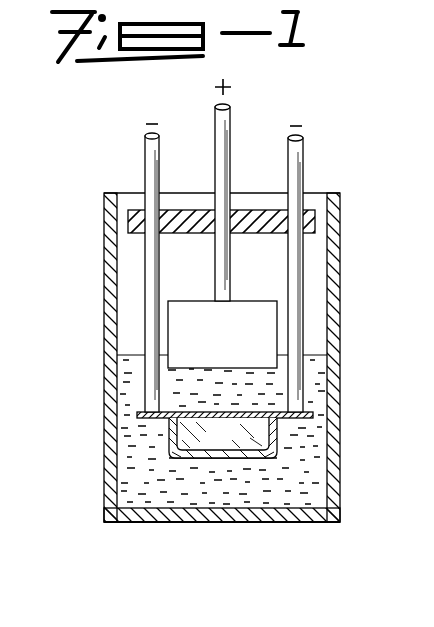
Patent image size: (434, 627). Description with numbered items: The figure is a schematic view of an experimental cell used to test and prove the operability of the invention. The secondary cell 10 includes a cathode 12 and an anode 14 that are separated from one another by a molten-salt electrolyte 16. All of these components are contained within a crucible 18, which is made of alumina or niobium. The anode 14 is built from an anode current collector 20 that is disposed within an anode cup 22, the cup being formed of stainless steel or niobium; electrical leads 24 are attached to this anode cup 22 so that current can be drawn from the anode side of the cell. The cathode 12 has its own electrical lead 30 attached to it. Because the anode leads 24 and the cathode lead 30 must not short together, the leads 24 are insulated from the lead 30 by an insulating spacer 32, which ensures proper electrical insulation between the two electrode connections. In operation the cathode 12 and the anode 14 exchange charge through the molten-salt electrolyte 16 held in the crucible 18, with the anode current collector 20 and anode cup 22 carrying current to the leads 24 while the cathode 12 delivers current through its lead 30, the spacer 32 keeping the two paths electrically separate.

The secondary cell 10 is at (100, 248).
The cathode 12 is at (232, 346).
The anode 14 is at (165, 439).
The molten-salt electrolyte 16 is at (132, 382).
The crucible 18 is at (233, 522).
The anode current collector 20 is at (236, 441).
The anode cup 22 is at (205, 458).
The electrical leads 24 is at (147, 148).
The electrical lead 30 is at (217, 150).
The insulating spacer 32 is at (255, 234).